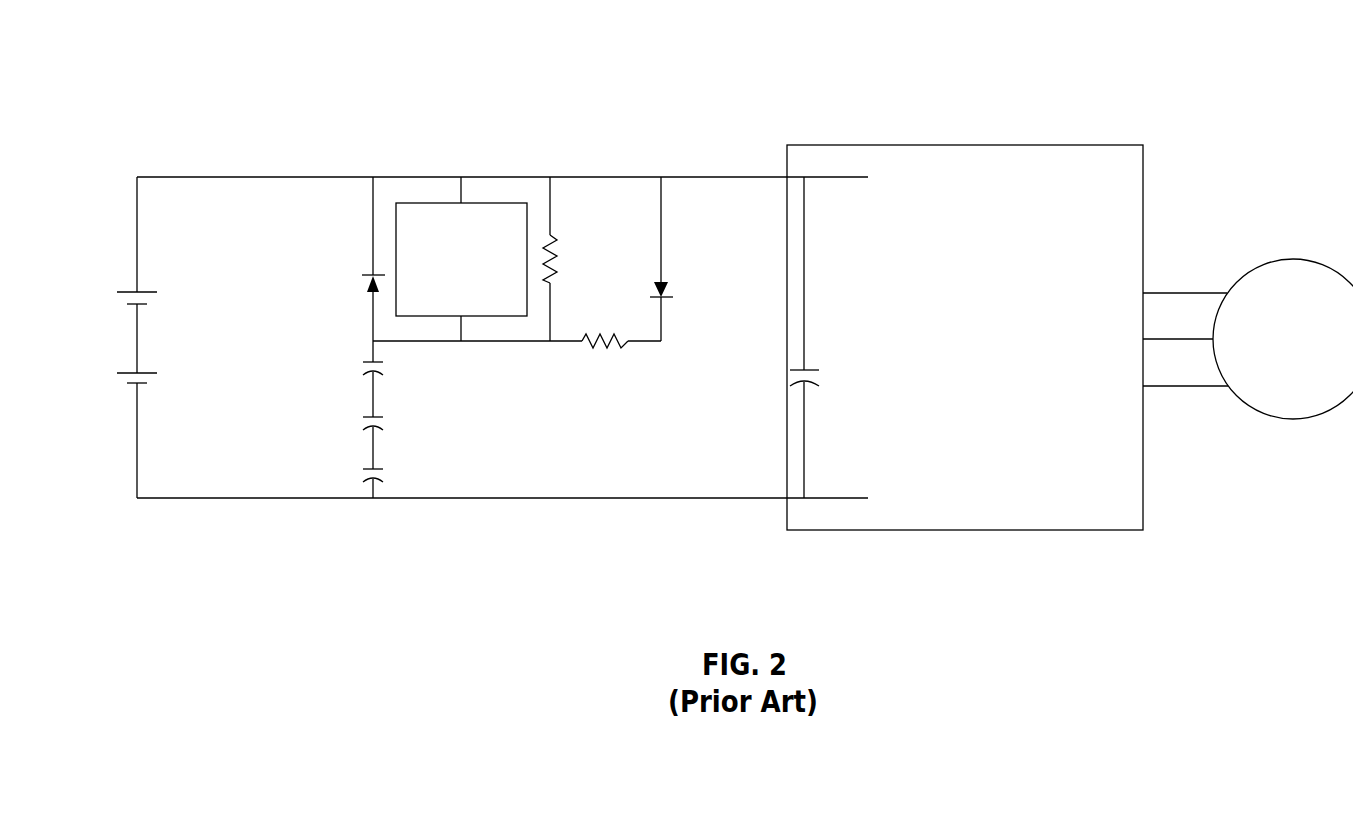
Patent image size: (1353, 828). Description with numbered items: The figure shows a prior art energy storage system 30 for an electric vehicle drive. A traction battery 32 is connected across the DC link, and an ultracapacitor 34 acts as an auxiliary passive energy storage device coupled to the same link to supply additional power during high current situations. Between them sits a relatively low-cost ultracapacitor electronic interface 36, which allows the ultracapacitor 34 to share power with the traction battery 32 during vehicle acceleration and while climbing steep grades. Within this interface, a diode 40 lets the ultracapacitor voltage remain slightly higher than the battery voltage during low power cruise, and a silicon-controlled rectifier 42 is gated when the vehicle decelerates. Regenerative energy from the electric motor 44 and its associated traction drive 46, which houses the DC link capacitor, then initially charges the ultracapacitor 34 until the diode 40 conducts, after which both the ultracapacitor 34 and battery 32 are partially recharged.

The energy storage system 30 is at (1184, 66).
The traction battery 32 is at (108, 356).
The ultracapacitor 34 is at (408, 424).
The ultracapacitor electronic interface 36 is at (538, 136).
The diode 40 is at (368, 273).
The silicon-controlled rectifier 42 is at (666, 292).
The electric motor 44 is at (1291, 259).
The traction drive 46 is at (1087, 144).